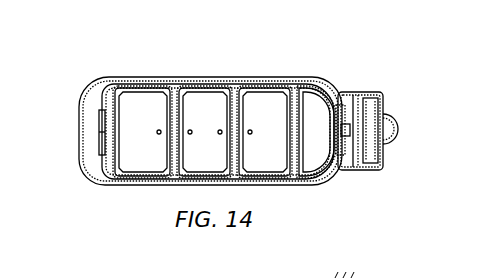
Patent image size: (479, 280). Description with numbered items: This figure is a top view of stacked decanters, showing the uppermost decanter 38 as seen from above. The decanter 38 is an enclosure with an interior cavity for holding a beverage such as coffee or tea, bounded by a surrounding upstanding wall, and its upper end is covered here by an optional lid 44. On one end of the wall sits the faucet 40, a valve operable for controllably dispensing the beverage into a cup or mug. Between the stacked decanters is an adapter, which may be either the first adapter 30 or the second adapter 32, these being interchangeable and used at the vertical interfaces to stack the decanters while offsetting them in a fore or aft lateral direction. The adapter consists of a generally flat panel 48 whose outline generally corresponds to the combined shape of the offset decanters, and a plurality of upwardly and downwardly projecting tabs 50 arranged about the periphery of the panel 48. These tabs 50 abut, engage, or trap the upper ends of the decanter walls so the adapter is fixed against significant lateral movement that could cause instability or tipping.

The first adapter 30 is at (341, 83).
The second adapter 32 is at (264, 113).
The decanter 38 is at (88, 187).
The faucet 40 is at (400, 123).
The lid 44 is at (285, 183).
The panel 48 is at (90, 100).
The tabs 50 is at (157, 80).